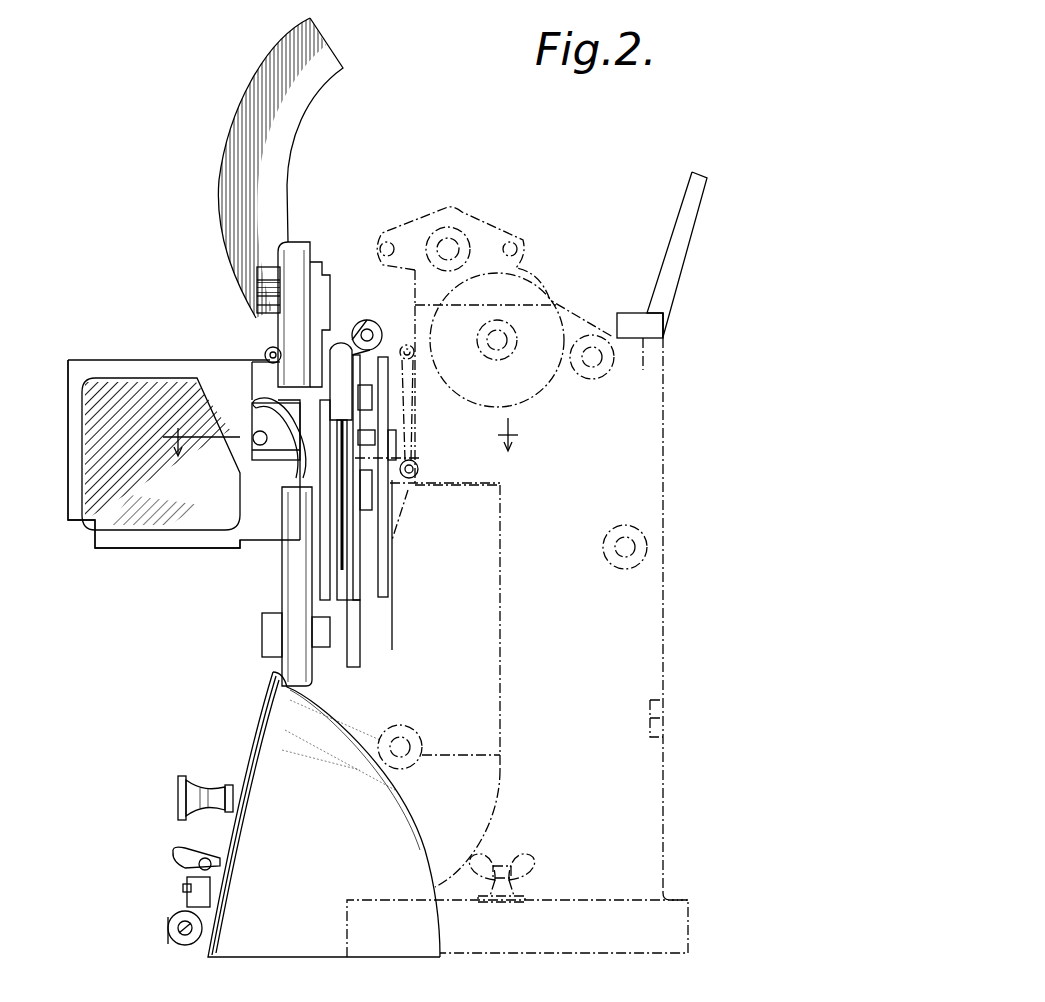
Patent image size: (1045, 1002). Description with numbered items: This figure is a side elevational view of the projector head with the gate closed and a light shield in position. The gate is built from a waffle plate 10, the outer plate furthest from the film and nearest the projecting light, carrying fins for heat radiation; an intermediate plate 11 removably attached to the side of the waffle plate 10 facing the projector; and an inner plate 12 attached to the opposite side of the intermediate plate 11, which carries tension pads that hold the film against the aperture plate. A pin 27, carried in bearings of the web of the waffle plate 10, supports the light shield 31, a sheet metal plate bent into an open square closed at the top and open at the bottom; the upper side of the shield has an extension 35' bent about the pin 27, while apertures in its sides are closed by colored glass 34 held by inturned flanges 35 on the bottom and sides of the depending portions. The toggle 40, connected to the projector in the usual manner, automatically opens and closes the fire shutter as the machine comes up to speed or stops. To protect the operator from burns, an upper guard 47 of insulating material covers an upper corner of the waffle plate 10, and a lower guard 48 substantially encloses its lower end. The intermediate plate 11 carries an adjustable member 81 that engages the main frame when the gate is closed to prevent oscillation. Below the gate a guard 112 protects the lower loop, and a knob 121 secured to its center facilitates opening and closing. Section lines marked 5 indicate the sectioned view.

The section line 5- 5 is at (343, 451).
The waffle plate 10 is at (298, 482).
The intermediate plate 11 is at (362, 665).
The inner plate 12 is at (382, 566).
The pin 27 is at (260, 320).
The light shield 31 is at (207, 350).
The colored glass 34 is at (125, 388).
The inturned flanges 35 is at (140, 473).
The extension 35' is at (243, 339).
The toggle 40 is at (420, 462).
The upper guard 47 is at (302, 250).
The lower guard 48 is at (282, 598).
The adjustable member 81 is at (402, 450).
The guard 112 is at (255, 731).
The knob 121 is at (178, 791).